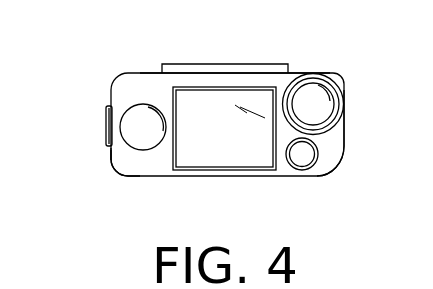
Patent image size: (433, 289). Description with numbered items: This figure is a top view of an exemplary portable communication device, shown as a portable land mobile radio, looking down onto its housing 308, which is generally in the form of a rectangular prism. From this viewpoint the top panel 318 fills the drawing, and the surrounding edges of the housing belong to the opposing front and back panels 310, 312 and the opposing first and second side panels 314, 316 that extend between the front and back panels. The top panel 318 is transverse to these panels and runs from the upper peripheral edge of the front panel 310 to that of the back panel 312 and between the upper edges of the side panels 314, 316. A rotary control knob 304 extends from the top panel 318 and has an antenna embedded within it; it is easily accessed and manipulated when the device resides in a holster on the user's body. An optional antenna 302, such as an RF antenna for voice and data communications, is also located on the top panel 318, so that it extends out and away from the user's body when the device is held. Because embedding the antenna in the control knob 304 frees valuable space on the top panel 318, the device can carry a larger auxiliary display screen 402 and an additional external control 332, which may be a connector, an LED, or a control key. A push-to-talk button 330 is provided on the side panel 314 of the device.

The antenna 302 is at (314, 82).
The rotary control knob 304 is at (132, 113).
The housing 308 is at (110, 166).
The front panel 310 is at (162, 177).
The back panel 312 is at (146, 72).
The first side panel 314 is at (110, 152).
The second side panel 316 is at (344, 138).
The top panel 318 is at (168, 83).
The push-to-talk button 330 is at (107, 115).
The control 332 is at (313, 167).
The auxiliary display screen 402 is at (224, 159).